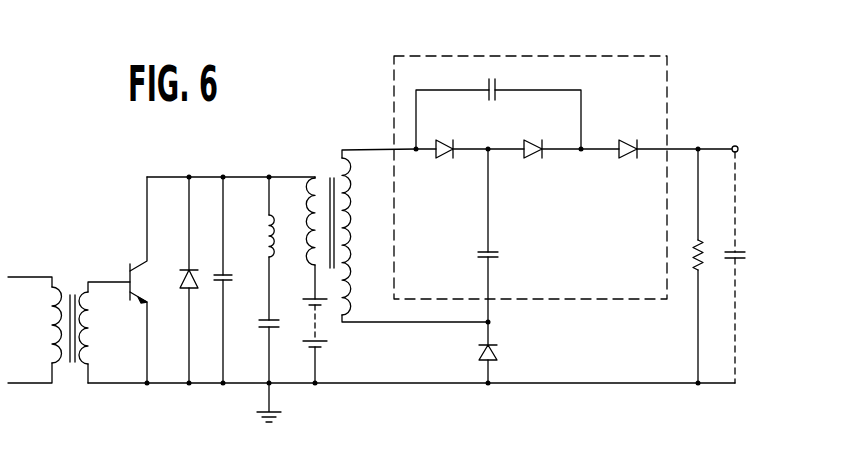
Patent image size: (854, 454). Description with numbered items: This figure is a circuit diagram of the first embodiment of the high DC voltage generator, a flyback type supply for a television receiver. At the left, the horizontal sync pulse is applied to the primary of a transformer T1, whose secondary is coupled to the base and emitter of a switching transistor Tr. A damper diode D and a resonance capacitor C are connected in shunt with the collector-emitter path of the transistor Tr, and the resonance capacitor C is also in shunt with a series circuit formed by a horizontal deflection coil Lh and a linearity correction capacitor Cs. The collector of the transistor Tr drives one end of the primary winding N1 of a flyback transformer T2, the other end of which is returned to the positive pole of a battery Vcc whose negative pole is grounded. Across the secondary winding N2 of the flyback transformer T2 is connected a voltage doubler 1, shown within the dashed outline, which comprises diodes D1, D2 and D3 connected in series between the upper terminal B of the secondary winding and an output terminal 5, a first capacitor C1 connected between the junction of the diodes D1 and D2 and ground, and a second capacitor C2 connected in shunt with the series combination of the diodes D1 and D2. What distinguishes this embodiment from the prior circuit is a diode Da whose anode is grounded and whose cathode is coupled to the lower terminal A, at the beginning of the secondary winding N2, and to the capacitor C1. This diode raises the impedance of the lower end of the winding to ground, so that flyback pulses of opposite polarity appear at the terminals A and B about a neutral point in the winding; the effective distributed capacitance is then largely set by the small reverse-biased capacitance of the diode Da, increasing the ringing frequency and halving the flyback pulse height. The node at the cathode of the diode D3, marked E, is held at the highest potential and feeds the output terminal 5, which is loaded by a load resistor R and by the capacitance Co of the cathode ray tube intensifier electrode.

The transformer T1 is at (72, 282).
The switching transistor Tr is at (128, 270).
The damper diode D is at (183, 268).
The resonance capacitor C is at (218, 270).
The horizontal deflection coil Lh is at (266, 238).
The linearity correction capacitor Cs is at (264, 331).
The primary winding N1 is at (313, 247).
The battery Vcc is at (322, 338).
The flyback transformer T2 is at (334, 168).
The secondary winding N2 is at (352, 222).
The voltage doubler 1 is at (669, 94).
The terminal of the secondary winding B is at (415, 153).
The second capacitor C2 is at (487, 101).
The diode D1 is at (442, 158).
The diode D2 is at (533, 140).
The diode D3 is at (634, 158).
The first capacitor C1 is at (500, 247).
The terminal of the secondary winding A is at (493, 322).
The diode Da is at (500, 355).
The node at the cathode of diode D3 E is at (700, 145).
The output terminal 5 is at (740, 148).
The load resistor R is at (695, 266).
The capacitance Co is at (738, 251).